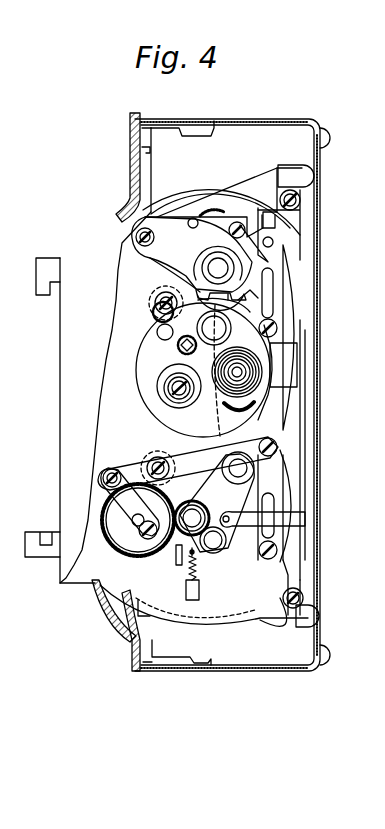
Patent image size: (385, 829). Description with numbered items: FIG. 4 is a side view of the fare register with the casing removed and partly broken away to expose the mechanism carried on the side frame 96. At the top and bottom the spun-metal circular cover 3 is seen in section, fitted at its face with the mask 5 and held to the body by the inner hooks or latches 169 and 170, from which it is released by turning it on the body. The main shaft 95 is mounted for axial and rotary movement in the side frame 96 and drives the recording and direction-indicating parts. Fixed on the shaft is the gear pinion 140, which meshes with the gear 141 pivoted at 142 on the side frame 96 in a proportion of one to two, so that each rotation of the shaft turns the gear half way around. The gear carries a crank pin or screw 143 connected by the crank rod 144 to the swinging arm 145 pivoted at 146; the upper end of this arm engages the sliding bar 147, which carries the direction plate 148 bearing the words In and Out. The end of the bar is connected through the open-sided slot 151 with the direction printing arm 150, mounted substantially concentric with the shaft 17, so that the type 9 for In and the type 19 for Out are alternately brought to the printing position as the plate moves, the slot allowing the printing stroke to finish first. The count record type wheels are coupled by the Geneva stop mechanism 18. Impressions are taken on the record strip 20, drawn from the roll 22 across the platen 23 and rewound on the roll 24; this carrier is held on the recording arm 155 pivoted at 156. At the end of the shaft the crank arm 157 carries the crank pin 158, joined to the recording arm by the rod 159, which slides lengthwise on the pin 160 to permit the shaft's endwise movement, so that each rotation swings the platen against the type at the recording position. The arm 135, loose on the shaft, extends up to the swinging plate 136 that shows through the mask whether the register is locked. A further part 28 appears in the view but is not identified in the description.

The circular cover 3 is at (289, 124).
The mask 5 is at (323, 150).
The printing type 9 is at (234, 289).
The shaft 17 is at (226, 268).
The Geneva stop mechanism 18 is at (203, 213).
The printing type 19 is at (238, 302).
The record strip 20 is at (180, 352).
The roll 22 is at (172, 388).
The platen 23 is at (186, 319).
The roll 24 is at (245, 385).
The spring 28 is at (200, 615).
The main shaft 95 is at (207, 598).
The side frame 96 is at (99, 415).
The arm 135 is at (292, 523).
The swinging plate 136 is at (305, 500).
The gear pinion 140 is at (137, 607).
The gear 141 is at (118, 535).
The pivot 142 is at (137, 522).
The crank pin or screw 143 is at (94, 585).
The crank rod 144 is at (126, 500).
The swinging arm 145 is at (150, 466).
The pivot 146 is at (156, 460).
The sliding bar 147 is at (273, 422).
The direction plate 148 is at (298, 368).
The direction printing arm 150 is at (258, 208).
The slot 151 is at (296, 235).
The recording arm 155 is at (168, 298).
The pivot 156 is at (164, 318).
The crank arm 157 is at (194, 530).
The crank pin 158 is at (215, 552).
The rod 159 is at (232, 495).
The pin 160 is at (248, 470).
The hook or latch 169 is at (207, 124).
The hook or latch 170 is at (134, 150).